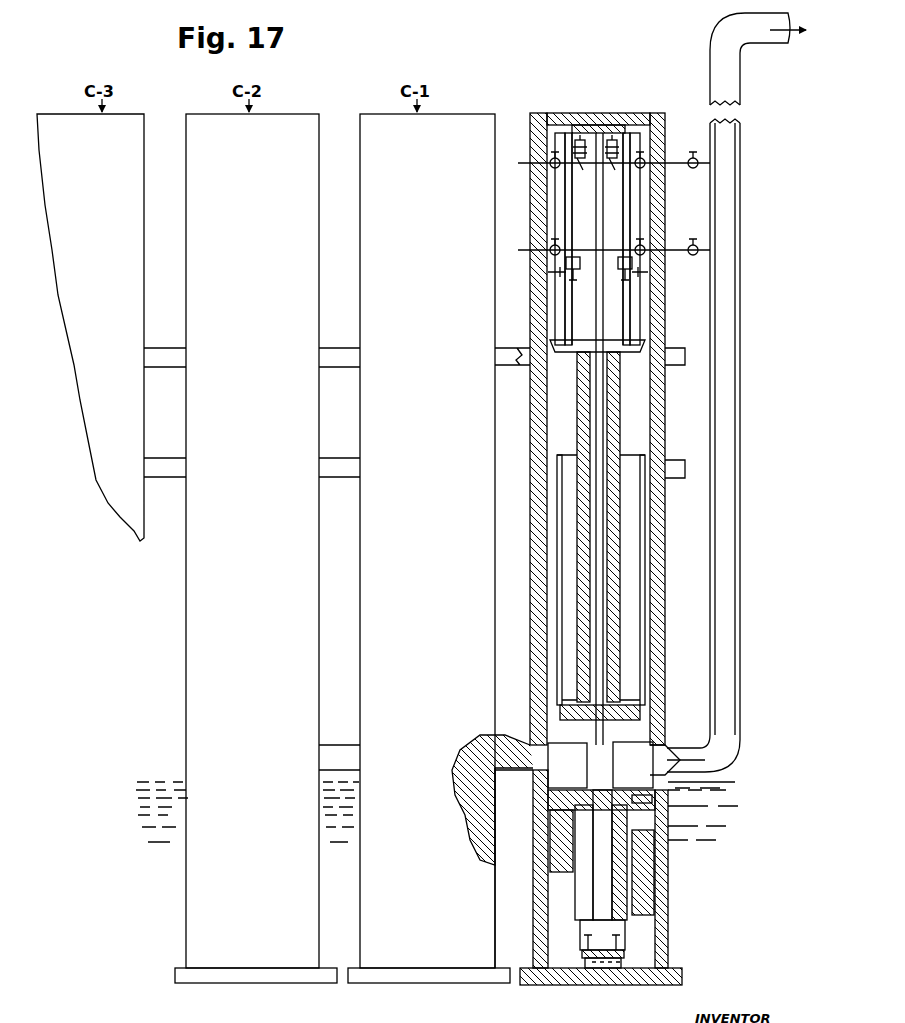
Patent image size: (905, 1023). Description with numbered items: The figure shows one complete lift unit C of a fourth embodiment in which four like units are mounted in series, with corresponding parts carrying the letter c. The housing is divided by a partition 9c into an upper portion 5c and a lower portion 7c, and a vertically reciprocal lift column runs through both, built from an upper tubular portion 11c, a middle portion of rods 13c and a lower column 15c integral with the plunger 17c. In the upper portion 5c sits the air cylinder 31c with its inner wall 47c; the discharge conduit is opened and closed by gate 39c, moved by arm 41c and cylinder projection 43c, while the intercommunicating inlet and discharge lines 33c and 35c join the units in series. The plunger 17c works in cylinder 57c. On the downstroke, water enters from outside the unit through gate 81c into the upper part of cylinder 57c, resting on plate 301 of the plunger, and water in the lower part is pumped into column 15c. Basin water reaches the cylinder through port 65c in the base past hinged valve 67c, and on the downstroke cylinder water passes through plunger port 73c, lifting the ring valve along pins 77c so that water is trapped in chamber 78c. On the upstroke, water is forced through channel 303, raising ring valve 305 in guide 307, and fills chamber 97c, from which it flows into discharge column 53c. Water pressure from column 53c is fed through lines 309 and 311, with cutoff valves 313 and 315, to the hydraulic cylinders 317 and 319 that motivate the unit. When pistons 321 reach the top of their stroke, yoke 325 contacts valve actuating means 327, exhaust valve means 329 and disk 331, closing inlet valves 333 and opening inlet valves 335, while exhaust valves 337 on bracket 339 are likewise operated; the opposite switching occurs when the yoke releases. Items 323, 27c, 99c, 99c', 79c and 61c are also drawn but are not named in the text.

The upper portion 5c is at (534, 562).
The unit C is at (597, 112).
The hydraulic cylinder 317 is at (617, 197).
The upper tubular portion 11c is at (612, 415).
The bracket 339 is at (578, 135).
The exhaust valve 337 is at (613, 140).
The hydraulic cylinder 319 is at (585, 165).
The piston 321 is at (590, 245).
The inlet valve 335 is at (548, 163).
The line 309 is at (673, 160).
The cutoff valve 313 is at (700, 160).
The inlet valve 333 is at (548, 250).
The cutoff valve 315 is at (671, 231).
The line 311 is at (693, 245).
The valve actuating means 327 is at (558, 275).
The exhaust valve means 329 is at (572, 278).
The disk 331 is at (597, 272).
The fitting 323 is at (642, 273).
The inlet line 33c is at (526, 356).
The yoke 325 is at (568, 342).
The discharge line 35c is at (682, 465).
The inner wall 47c is at (625, 372).
The tube 27c is at (617, 392).
The arm 41c is at (632, 450).
The gate 39c is at (648, 482).
The cylinder projection 43c is at (648, 535).
The air cylinder 31c is at (632, 605).
The partition 9c is at (560, 725).
The discharge column 53c is at (748, 105).
The guide 307 is at (567, 765).
The rod 13c is at (633, 765).
The chamber 97c is at (665, 752).
The liquid level 99c' is at (725, 756).
The ground chunk 99c is at (492, 846).
The ring valve 305 is at (668, 782).
The channel 303 is at (662, 797).
The gate 81c is at (655, 817).
The seal 79c is at (650, 830).
The lower housing 61c is at (555, 945).
The column 15c is at (612, 855).
The lower portion 7c is at (676, 851).
The plate 301 is at (648, 880).
The cylinder 57c is at (575, 880).
The plunger 17c is at (575, 905).
The chamber 78c is at (620, 930).
The pin 77c is at (615, 945).
The plunger port 73c is at (590, 963).
The port 65c is at (598, 985).
The hinged valve 67c is at (604, 985).